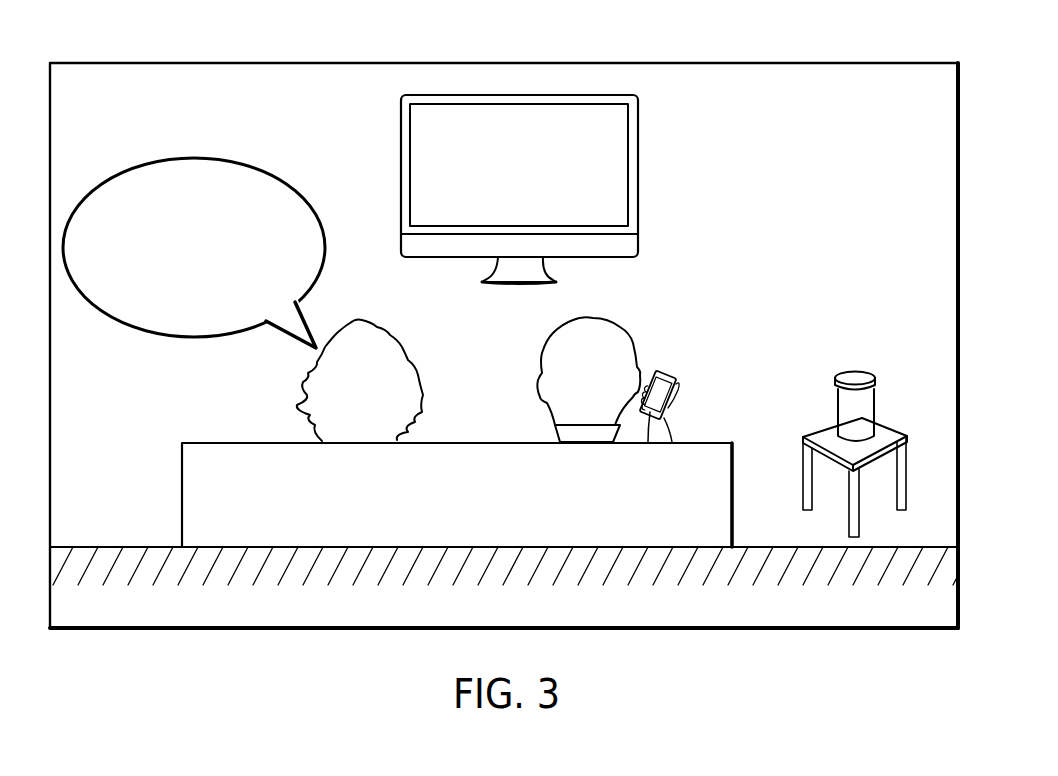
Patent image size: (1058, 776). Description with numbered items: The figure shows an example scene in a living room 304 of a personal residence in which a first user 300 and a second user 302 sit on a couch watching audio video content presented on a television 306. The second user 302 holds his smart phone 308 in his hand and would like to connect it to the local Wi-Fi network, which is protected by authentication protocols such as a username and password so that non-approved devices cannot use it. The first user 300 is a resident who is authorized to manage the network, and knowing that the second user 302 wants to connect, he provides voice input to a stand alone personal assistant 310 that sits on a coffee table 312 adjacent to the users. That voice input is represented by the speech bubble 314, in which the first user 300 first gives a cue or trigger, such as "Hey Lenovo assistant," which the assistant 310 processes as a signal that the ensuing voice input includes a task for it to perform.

The first user 300 is at (300, 390).
The second user 302 is at (540, 380).
The living room 304 is at (840, 140).
The television 306 is at (401, 177).
The smart phone 308 is at (678, 379).
The stand alone personal assistant 310 is at (837, 392).
The coffee table 312 is at (803, 436).
The speech bubble 314 is at (133, 334).